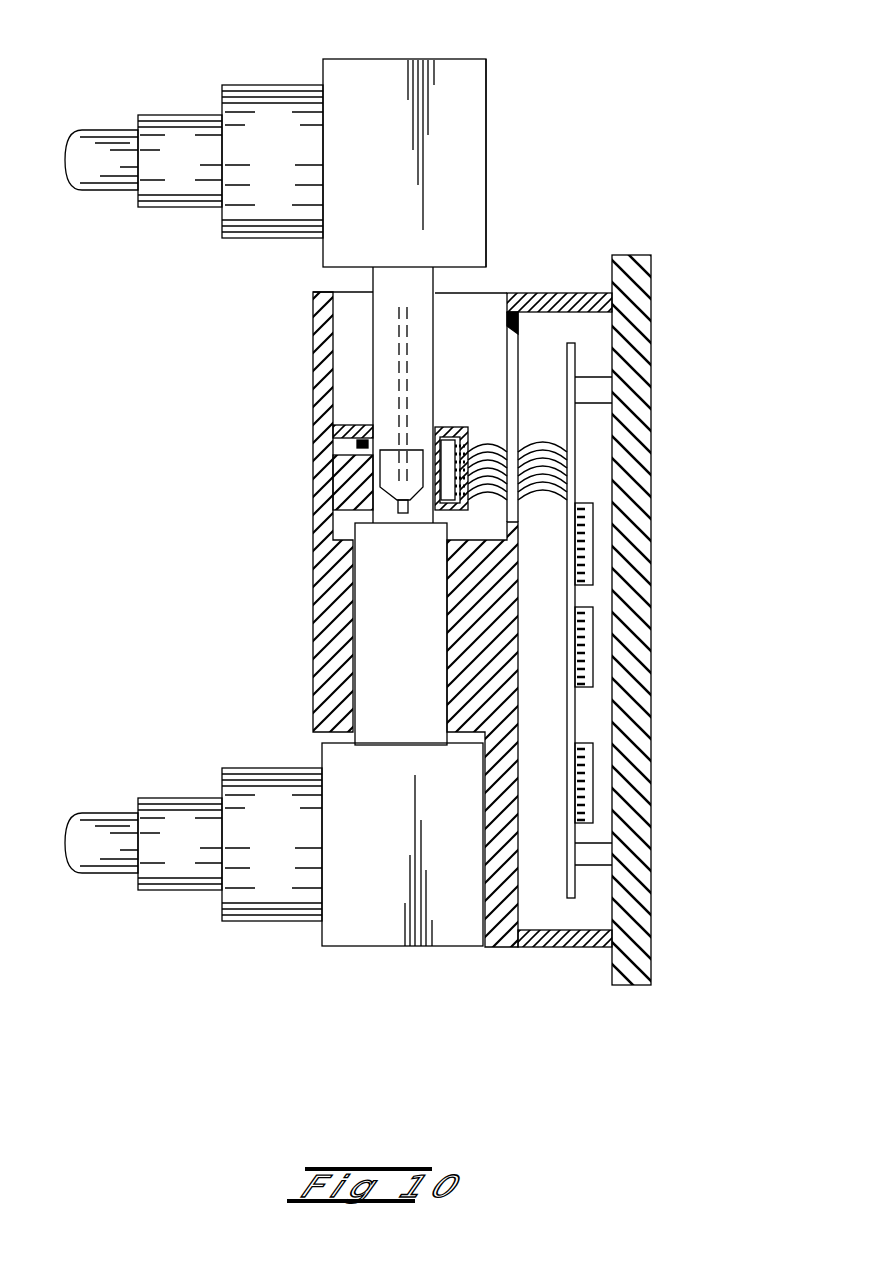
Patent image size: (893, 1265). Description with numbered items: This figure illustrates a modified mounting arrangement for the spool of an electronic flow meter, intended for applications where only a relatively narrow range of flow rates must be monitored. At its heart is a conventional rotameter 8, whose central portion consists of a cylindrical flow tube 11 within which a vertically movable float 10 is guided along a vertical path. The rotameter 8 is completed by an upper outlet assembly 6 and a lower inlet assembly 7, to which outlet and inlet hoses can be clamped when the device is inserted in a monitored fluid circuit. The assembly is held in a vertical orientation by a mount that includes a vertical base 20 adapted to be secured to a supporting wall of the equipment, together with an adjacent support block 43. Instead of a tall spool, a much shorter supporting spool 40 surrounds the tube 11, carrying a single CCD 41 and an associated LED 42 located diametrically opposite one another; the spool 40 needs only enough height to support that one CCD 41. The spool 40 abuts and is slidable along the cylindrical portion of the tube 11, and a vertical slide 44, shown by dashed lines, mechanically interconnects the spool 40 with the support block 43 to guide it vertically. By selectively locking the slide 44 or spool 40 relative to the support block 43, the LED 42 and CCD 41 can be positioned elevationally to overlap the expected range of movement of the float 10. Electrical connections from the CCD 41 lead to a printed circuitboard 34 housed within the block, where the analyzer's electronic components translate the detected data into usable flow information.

The upper outlet assembly 6 is at (460, 52).
The lower inlet assembly 7 is at (397, 958).
The rotameter 8 is at (506, 172).
The float 10 is at (415, 458).
The flow tube 11 is at (390, 280).
The vertical base 20 is at (635, 618).
The printed circuitboard 34 is at (577, 423).
The spool 40 is at (345, 500).
The CCD 41 is at (447, 437).
The LED 42 is at (345, 455).
The support block 43 is at (497, 693).
The vertical slide 44 is at (397, 375).